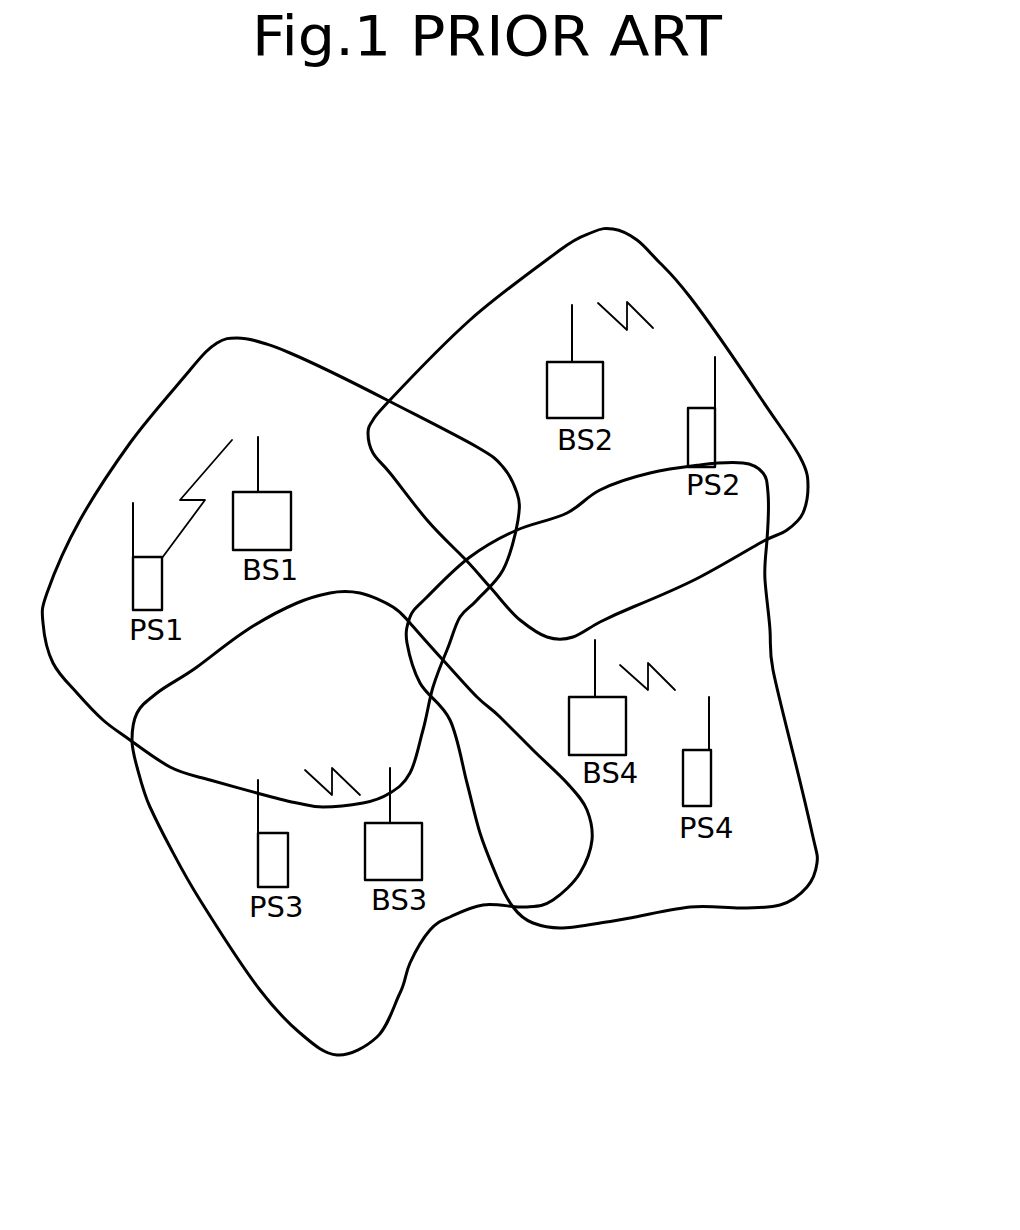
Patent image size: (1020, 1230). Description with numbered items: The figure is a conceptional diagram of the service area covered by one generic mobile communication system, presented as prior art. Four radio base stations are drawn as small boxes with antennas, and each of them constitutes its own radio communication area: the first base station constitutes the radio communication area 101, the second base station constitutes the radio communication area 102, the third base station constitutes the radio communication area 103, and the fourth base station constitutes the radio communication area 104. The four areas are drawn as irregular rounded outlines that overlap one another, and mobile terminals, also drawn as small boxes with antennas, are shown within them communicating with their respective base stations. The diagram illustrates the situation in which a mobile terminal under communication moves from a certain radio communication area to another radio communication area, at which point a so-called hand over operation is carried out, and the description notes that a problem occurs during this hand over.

The radio communication area 101 is at (315, 362).
The radio communication area 102 is at (677, 285).
The radio communication area 103 is at (408, 967).
The radio communication area 104 is at (775, 652).